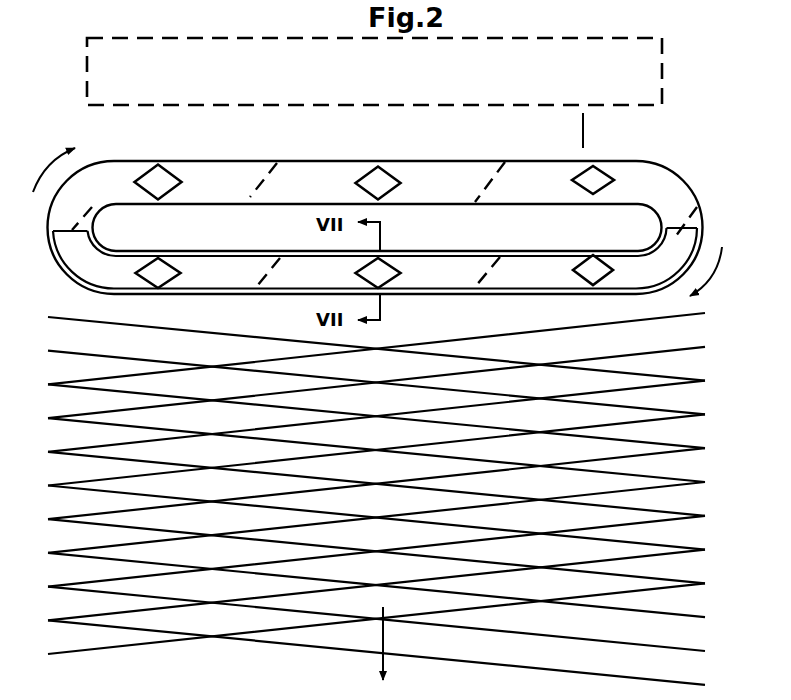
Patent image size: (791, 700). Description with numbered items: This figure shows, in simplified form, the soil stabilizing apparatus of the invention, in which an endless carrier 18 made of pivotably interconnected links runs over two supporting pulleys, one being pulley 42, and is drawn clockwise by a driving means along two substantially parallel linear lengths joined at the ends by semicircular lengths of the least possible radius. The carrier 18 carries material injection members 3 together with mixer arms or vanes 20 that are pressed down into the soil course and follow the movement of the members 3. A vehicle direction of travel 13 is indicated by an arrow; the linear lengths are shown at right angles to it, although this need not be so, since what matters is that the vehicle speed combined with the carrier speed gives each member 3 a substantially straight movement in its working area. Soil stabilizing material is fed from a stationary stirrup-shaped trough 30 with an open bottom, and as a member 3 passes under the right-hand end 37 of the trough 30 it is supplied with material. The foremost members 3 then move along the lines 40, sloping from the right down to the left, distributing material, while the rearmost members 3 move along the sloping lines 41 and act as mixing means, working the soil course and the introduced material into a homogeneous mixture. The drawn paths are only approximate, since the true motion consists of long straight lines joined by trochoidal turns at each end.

The pulley 42 is at (466, 54).
The carrier 18 is at (447, 172).
The vanes 20 is at (256, 163).
The trough 30 is at (652, 268).
The right-hand end of the trough 37 is at (690, 237).
The material injection member 3 is at (600, 180).
The direction of travel 13 is at (583, 127).
The lines 40 is at (684, 350).
The sloping lines 41 is at (665, 477).